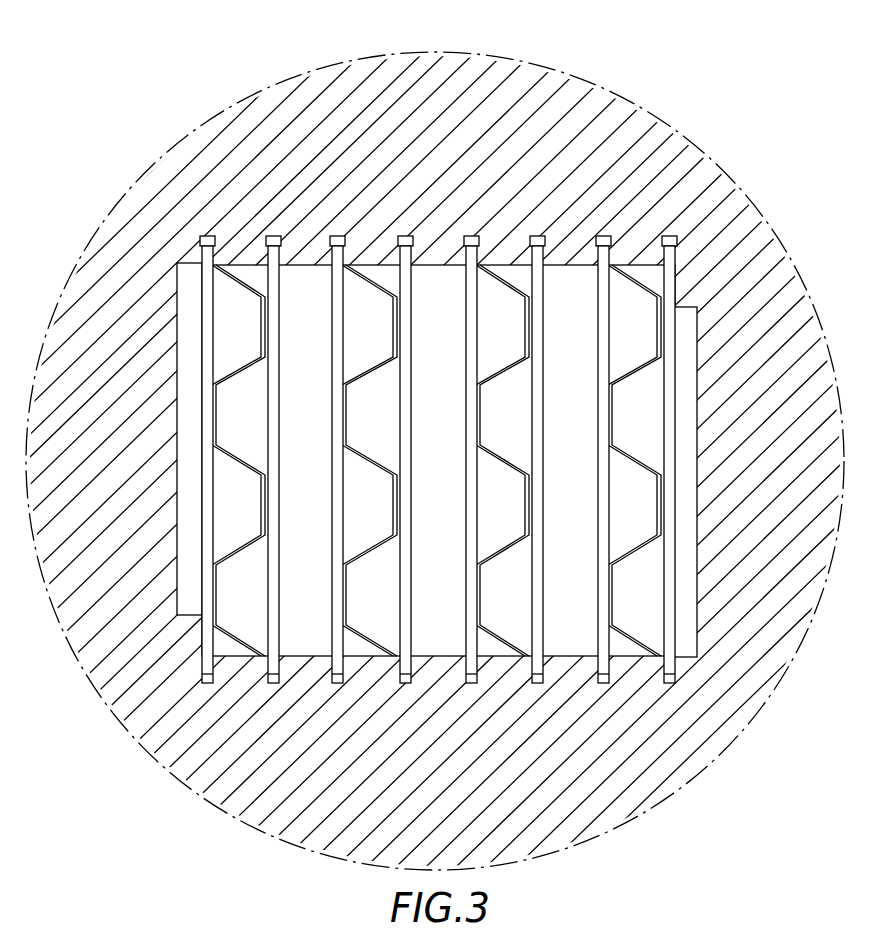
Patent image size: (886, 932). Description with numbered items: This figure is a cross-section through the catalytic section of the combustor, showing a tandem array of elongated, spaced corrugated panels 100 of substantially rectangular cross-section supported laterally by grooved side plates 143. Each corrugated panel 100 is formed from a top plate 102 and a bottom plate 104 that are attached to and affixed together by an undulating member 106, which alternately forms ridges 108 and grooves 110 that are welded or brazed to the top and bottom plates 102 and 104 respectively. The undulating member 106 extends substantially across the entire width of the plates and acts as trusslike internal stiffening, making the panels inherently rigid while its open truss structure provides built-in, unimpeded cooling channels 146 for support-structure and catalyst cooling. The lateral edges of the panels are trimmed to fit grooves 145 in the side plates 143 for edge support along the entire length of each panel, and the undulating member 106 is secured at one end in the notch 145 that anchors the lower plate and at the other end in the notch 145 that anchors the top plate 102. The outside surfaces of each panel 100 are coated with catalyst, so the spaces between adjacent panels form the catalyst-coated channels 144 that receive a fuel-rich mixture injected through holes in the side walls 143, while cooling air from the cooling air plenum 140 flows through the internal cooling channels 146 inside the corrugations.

The corrugated panel 100 is at (240, 688).
The top plate 102 is at (178, 288).
The bottom plate 104 is at (275, 332).
The undulating member 106 is at (228, 370).
The ridges 108 is at (343, 585).
The grooves 110 is at (392, 522).
The cooling air plenum 140 is at (380, 602).
The side plates 143 is at (333, 82).
The catalyst-coated channels 144 is at (568, 630).
The grooves (notches) 145 is at (670, 238).
The cooling channels 146 is at (633, 618).